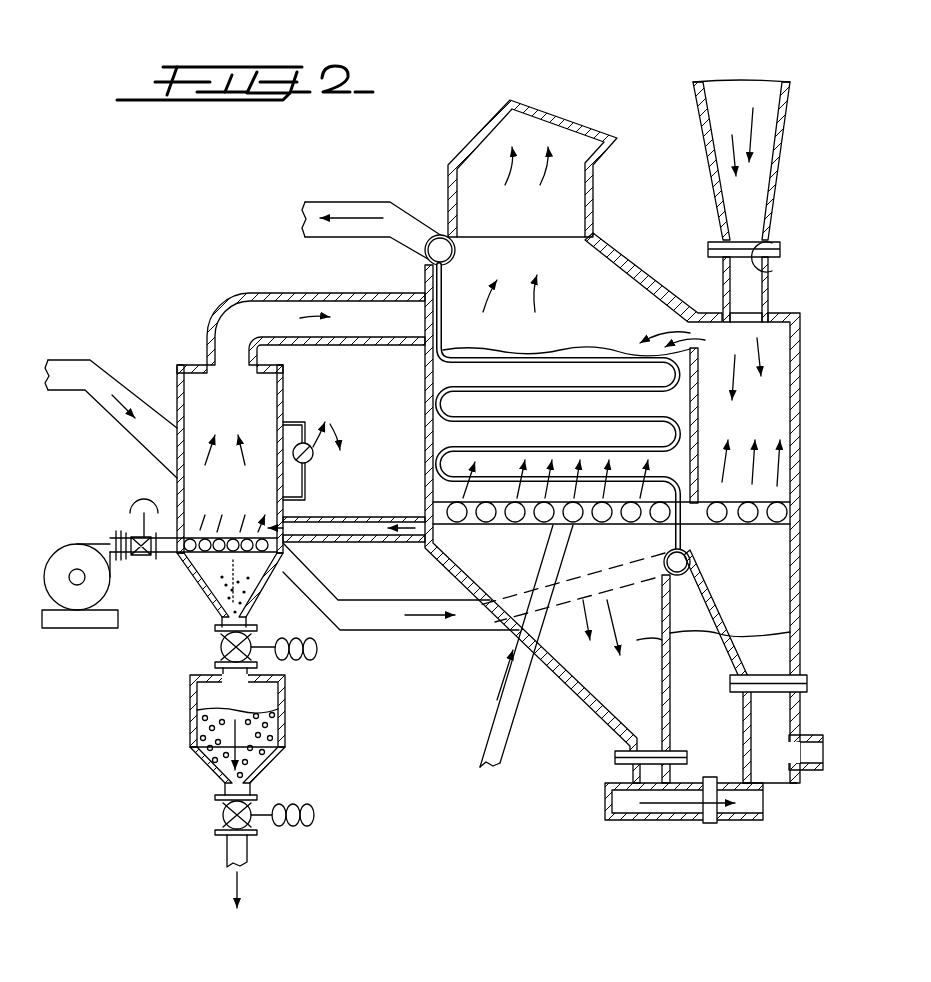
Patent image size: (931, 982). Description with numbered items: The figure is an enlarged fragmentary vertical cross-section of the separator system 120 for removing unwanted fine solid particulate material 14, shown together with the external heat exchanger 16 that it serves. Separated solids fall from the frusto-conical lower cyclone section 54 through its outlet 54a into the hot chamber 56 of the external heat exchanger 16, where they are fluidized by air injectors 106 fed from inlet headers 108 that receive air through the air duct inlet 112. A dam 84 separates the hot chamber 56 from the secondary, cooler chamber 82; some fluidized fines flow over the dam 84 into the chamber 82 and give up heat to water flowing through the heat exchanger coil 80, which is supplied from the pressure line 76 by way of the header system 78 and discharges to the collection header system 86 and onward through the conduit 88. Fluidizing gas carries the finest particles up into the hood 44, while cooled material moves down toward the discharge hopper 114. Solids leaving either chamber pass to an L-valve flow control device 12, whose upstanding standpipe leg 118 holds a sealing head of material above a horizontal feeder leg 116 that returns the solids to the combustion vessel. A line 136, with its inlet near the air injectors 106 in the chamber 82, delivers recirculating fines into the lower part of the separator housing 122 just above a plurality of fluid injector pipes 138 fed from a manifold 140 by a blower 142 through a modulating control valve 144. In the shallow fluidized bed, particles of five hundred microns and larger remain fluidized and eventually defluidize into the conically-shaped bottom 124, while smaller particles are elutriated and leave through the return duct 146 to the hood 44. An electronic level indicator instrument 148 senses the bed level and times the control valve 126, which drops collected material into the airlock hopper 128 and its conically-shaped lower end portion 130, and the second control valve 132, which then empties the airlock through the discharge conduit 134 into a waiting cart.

The L-valve flow control device 12 is at (602, 813).
The fine solid particulate material 14 is at (245, 494).
The external heat exchanger 16 is at (472, 652).
The hood 44 is at (493, 118).
The lower cyclone section 54 is at (778, 180).
The outlet 54a is at (770, 268).
The hot chamber 56 is at (797, 339).
The pressure line 76 is at (71, 358).
The header system 78 is at (680, 577).
The heat exchanger coil 80 is at (517, 420).
The secondary chamber 82 is at (567, 449).
The dam 84 is at (698, 408).
The collection header system 86 is at (449, 259).
The conduit 88 is at (343, 202).
The air injectors 106 is at (535, 523).
The inlet headers 108 is at (705, 477).
The air duct inlet 112 is at (520, 707).
The discharge hopper 114 is at (598, 714).
The feeder leg 116 is at (810, 737).
The standpipe leg 118 is at (740, 708).
The separator system 120 is at (195, 593).
The housing 122 is at (177, 430).
The conically-shaped bottom 124 is at (262, 590).
The control valve 126 is at (217, 647).
The airlock hopper 128 is at (285, 720).
The conically-shaped lower end portion 130 is at (205, 762).
The second control valve 132 is at (217, 817).
The discharge conduit 134 is at (248, 850).
The line 136 is at (325, 517).
The fluid injector pipes 138 is at (230, 551).
The manifold 140 is at (177, 537).
The blower 142 is at (58, 545).
The modulating control valve 144 is at (133, 535).
The return duct 146 is at (248, 293).
The electronic level indicator instrument 148 is at (315, 455).